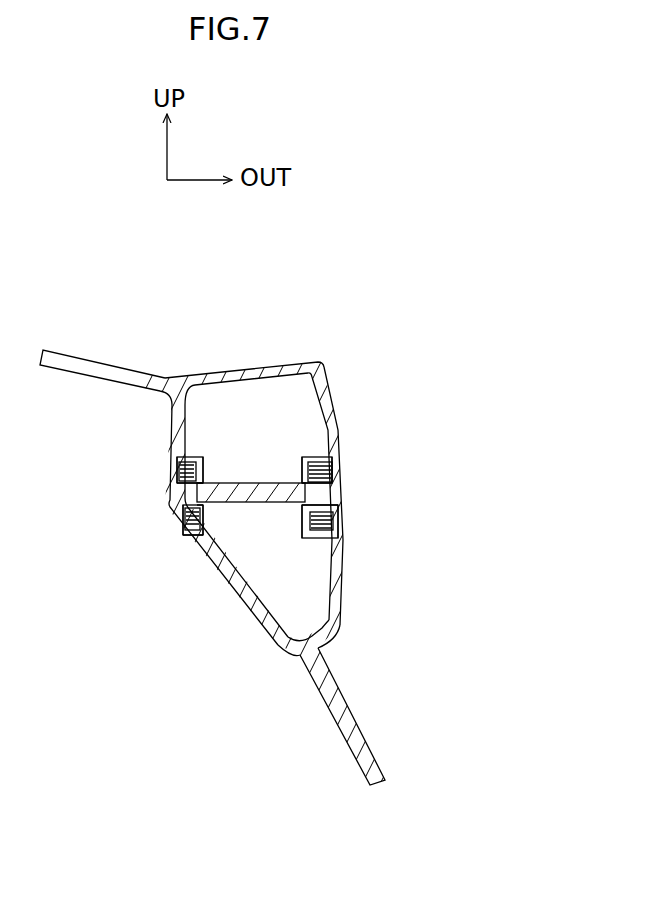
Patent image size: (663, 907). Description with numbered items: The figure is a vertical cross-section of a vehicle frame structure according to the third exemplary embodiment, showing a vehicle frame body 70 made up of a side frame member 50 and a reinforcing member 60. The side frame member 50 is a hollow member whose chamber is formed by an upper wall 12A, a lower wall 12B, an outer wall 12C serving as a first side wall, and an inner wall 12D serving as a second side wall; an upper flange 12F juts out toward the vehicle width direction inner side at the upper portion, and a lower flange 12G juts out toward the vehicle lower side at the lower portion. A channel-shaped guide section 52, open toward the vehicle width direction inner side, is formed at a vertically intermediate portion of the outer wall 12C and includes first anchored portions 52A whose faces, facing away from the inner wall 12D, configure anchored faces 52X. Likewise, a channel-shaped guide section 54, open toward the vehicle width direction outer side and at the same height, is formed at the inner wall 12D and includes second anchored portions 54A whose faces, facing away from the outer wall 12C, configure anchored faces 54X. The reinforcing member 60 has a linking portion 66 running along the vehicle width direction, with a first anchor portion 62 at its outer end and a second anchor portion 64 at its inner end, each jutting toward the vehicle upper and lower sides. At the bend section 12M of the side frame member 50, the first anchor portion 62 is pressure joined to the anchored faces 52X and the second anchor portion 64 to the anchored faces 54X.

The bend section 12M is at (360, 320).
The upper flange 12F is at (98, 360).
The upper wall 12A is at (226, 372).
The outer wall 12C is at (333, 404).
The inner wall 12D is at (172, 422).
The lower wall 12B is at (325, 640).
The lower flange 12G is at (364, 735).
The side frame member 50 is at (350, 296).
The vehicle frame body 70 is at (438, 317).
The linking portion 66 is at (252, 482).
The guide section 54 is at (199, 455).
The anchored faces 54X is at (183, 470).
The second anchored portions 54A is at (184, 490).
The second anchor portion 64 is at (204, 470).
The guide section 52 is at (302, 455).
The anchored faces 52X is at (337, 467).
The first anchored portions 52A is at (334, 478).
The first anchor portion 62 is at (306, 477).
The reinforcing member 60 is at (262, 530).